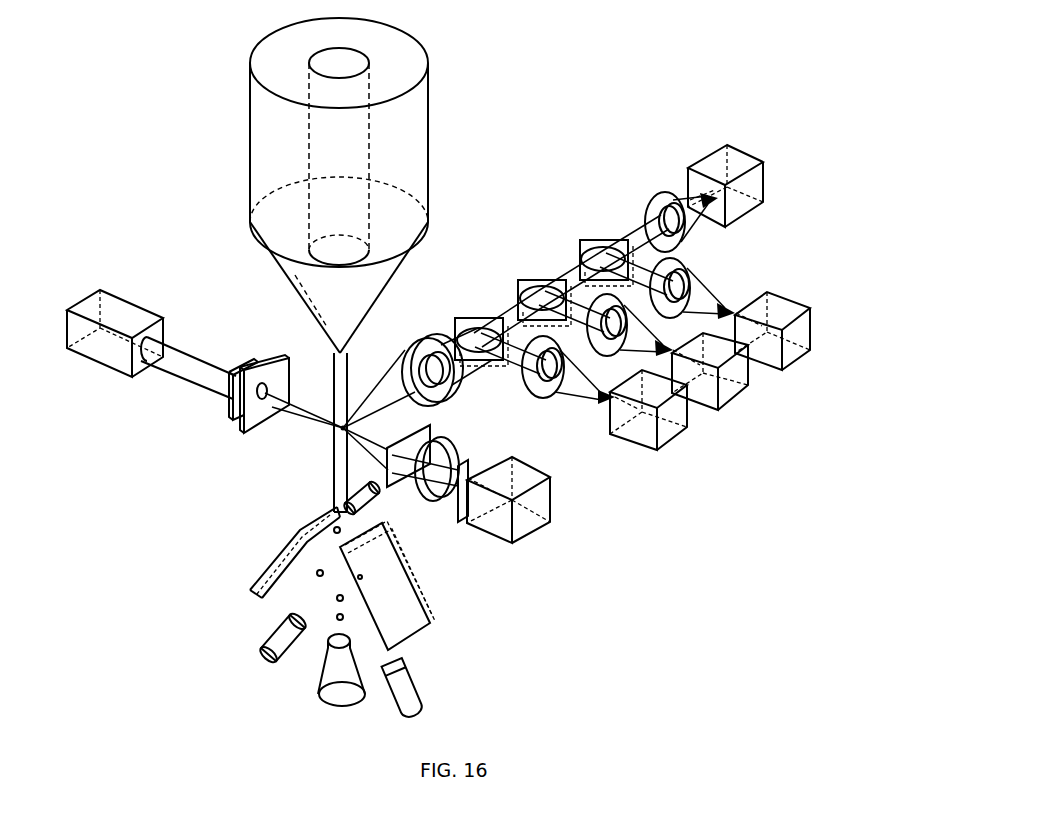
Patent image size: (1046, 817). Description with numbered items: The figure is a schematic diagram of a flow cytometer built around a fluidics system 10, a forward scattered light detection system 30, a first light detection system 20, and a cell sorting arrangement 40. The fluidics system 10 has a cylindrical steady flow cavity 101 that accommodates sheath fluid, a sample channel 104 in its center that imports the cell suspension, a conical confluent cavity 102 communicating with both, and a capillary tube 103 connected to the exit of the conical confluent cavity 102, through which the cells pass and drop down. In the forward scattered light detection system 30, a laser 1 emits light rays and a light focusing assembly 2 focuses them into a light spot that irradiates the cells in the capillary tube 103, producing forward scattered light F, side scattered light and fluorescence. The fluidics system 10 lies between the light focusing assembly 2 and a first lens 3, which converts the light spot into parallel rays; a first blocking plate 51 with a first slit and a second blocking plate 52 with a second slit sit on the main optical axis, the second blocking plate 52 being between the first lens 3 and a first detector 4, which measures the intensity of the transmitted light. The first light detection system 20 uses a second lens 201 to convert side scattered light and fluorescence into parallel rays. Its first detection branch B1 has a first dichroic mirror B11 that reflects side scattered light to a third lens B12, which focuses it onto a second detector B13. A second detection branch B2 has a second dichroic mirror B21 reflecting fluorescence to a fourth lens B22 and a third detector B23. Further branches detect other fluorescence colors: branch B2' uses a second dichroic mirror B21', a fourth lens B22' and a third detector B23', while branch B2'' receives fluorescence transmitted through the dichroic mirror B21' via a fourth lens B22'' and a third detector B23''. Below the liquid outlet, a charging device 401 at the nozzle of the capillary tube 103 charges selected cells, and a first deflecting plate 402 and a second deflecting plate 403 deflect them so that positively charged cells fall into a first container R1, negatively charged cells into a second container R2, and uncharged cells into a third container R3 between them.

The fluidics system 10 is at (214, 150).
The cylindrical steady flow cavity 101 is at (271, 60).
The conical confluent cavity 102 is at (317, 293).
The capillary tube 103 is at (332, 460).
The sample channel 104 is at (342, 63).
The forward scattered light detection system 30 is at (167, 415).
The laser 1 is at (108, 310).
The light focusing assembly 2 is at (247, 422).
The forward scattered light F is at (392, 424).
The second lens 201 is at (418, 355).
The first light detection system 20 is at (722, 463).
The first detection branch B1 is at (465, 304).
The first dichroic mirror B11 is at (473, 346).
The third lens B12 is at (537, 390).
The second detector B13 is at (630, 430).
The second detection branch B2 is at (609, 333).
The second dichroic mirror B21 is at (544, 287).
The fourth lens B22 is at (630, 339).
The third detector B23 is at (714, 385).
The second detection branch B2' is at (669, 293).
The second dichroic mirror B21' is at (600, 247).
The fourth lens B22' is at (698, 288).
The third detector B23' is at (780, 344).
The second detection branch B2'' is at (701, 192).
The fourth lens B22'' is at (662, 212).
The third detector B23'' is at (758, 186).
The first blocking plate 51 is at (405, 441).
The first lens 3 is at (446, 447).
The second blocking plate 52 is at (457, 508).
The first detector 4 is at (525, 517).
The sorting module 40 is at (211, 548).
The charging device 401 is at (368, 502).
The first deflecting plate 402 is at (277, 563).
The second deflecting plate 403 is at (400, 606).
The first container R1 is at (282, 637).
The second container R2 is at (401, 687).
The third container R3 is at (337, 674).